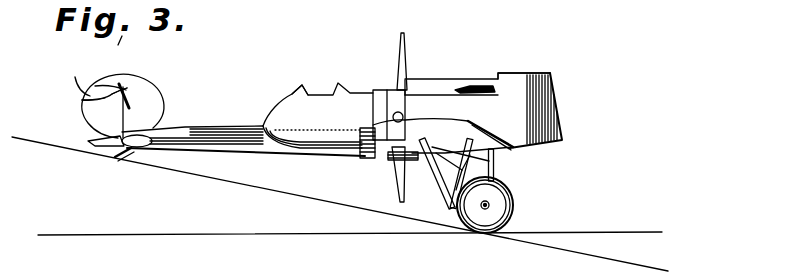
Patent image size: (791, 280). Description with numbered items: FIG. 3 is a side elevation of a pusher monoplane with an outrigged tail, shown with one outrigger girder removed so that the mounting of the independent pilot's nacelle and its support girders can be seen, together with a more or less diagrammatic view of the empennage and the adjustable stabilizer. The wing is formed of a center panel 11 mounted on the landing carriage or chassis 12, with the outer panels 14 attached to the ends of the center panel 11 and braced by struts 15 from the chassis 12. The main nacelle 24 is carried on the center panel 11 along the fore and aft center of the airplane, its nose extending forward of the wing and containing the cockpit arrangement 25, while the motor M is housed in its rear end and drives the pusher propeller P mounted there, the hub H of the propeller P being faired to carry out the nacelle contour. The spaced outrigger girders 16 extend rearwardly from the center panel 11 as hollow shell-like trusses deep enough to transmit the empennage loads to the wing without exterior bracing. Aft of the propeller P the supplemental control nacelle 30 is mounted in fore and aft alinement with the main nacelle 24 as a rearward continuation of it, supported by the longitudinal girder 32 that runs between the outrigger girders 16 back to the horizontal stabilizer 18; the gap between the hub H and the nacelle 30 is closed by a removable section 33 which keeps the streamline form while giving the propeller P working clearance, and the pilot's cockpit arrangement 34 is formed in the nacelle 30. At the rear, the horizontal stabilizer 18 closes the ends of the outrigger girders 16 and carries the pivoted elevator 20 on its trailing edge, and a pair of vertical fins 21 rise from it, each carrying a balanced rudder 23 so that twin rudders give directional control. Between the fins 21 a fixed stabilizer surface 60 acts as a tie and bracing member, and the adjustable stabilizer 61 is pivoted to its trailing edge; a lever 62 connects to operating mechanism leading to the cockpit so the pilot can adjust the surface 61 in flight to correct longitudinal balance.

The center panel 11 is at (438, 165).
The landing carriage 12 is at (505, 190).
The outer panels 14 is at (487, 134).
The struts 15 is at (494, 171).
The outrigger girders 16 is at (331, 154).
The horizontal stabilizer 18 is at (144, 148).
The elevator 20 is at (88, 140).
The fins 21 is at (141, 104).
The rudder 23 is at (104, 84).
The main nacelle 24 is at (558, 109).
The cockpit arrangement 25 is at (526, 74).
The supplemental nacelle 30 is at (282, 102).
The longitudinal girder 32 is at (181, 136).
The removable section 33 is at (380, 92).
The pilot's cockpit arrangement 34 is at (318, 95).
The fixed stabilizer surface 60 is at (126, 90).
The adjustable stabilizer 61 is at (70, 79).
The lever 62 is at (88, 106).
The pusher propeller P is at (404, 66).
The hub H is at (403, 93).
The motor M is at (456, 92).